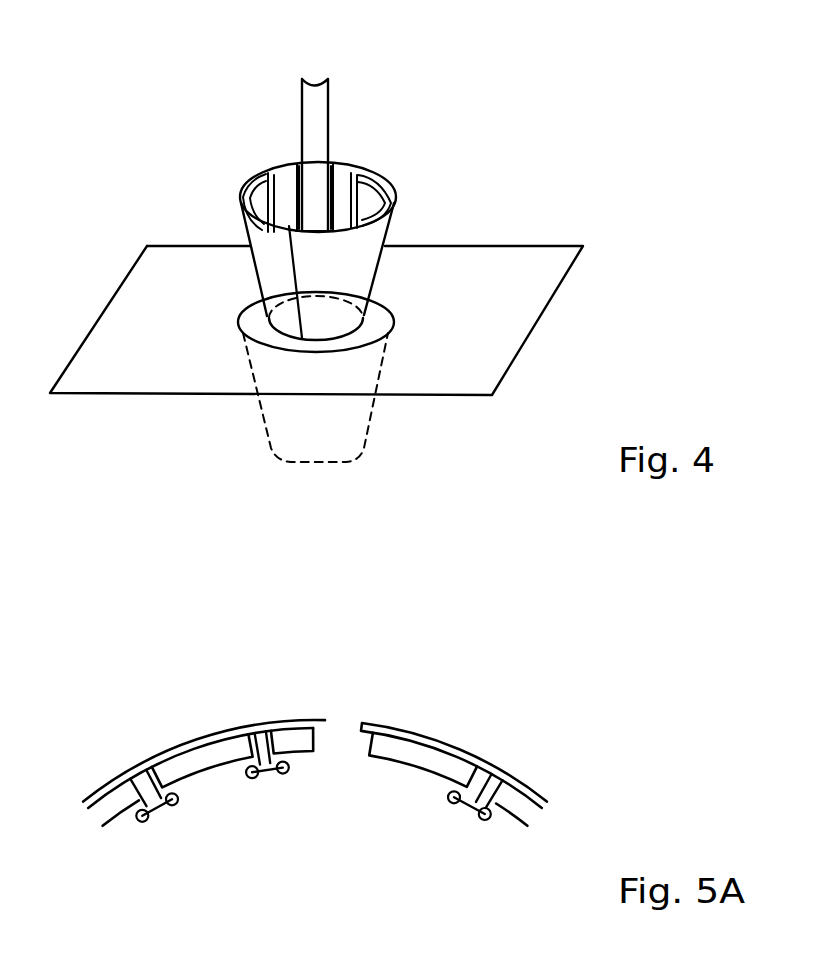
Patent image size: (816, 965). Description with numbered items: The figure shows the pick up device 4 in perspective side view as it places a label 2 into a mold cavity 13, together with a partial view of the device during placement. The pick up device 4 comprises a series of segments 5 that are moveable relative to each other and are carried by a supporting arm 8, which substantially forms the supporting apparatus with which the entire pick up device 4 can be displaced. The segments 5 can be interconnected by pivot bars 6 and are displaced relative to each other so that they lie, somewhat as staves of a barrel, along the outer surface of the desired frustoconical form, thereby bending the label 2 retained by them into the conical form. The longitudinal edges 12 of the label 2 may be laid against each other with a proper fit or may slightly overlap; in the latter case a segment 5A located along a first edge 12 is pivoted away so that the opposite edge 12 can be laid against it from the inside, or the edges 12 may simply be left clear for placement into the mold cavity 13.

In FIG. 4, the label 2 is at (395, 236).
In FIG. 4, the pick up device 4 is at (252, 105).
In FIG. 4, the segments 5 is at (258, 176).
In FIG. 5A, the segments 5 is at (202, 757).
In FIG. 5A, the segment 5A is at (291, 740).
In FIG. 5A, the pivot bars 6 is at (158, 809).
In FIG. 4, the supporting arm 8 is at (333, 108).
In FIG. 4, the longitudinal edges 12 is at (290, 256).
In FIG. 5A, the longitudinal edges 12 is at (362, 722).
In FIG. 4, the mold cavity 13 is at (380, 321).